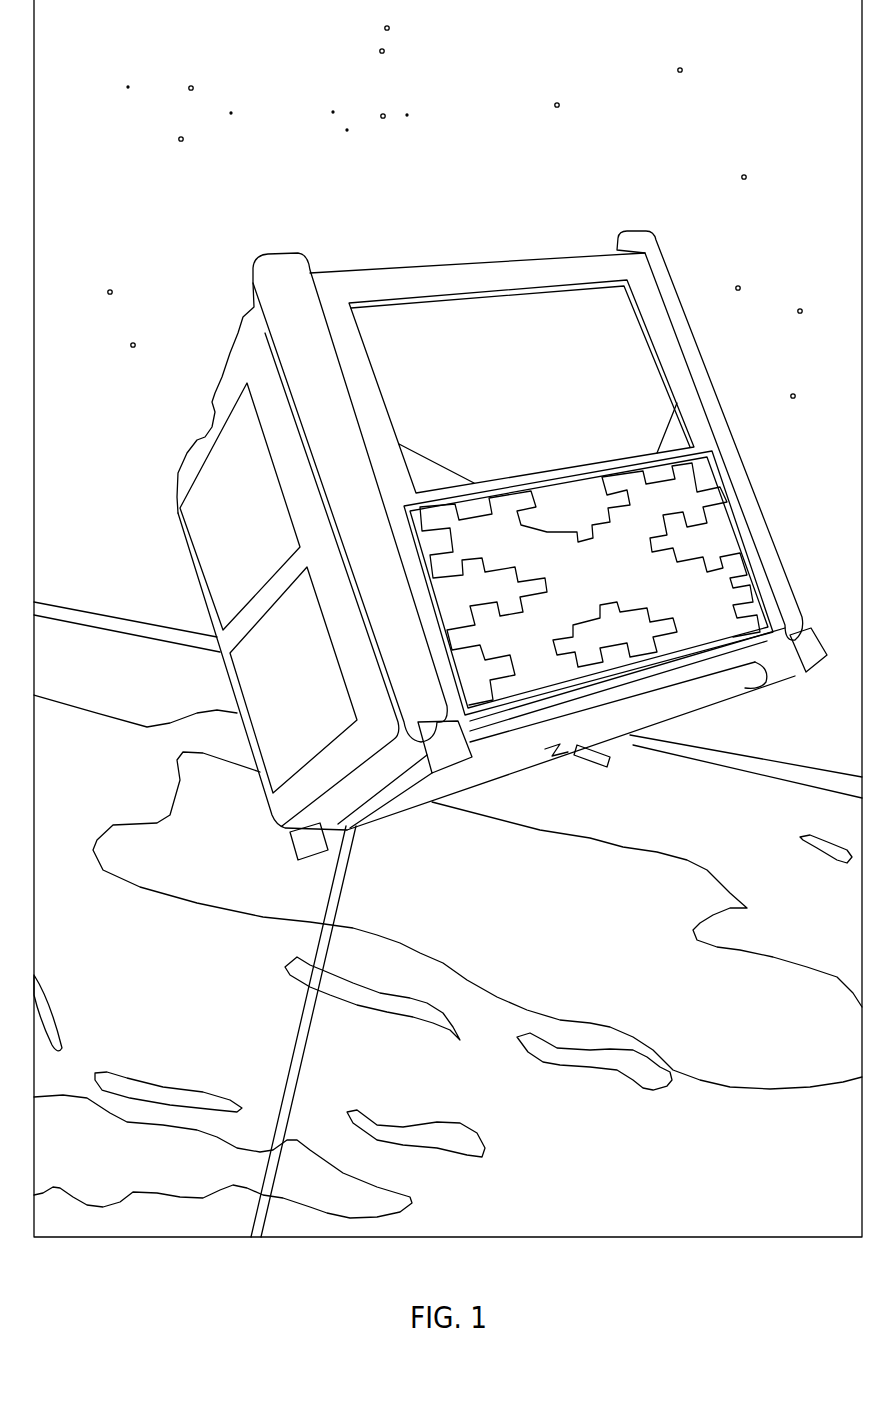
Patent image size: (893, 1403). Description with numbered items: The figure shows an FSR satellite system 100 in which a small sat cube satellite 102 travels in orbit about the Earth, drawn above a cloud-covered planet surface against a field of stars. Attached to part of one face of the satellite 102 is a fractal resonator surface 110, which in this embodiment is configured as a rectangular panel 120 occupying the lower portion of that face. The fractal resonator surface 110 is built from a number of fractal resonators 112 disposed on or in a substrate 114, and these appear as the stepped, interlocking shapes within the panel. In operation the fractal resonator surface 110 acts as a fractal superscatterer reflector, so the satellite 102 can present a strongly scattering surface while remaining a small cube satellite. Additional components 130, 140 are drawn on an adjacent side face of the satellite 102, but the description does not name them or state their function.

The FSR satellite system 100 is at (477, 734).
The small sat cube satellite 102 is at (430, 800).
The fractal resonator surface 110 is at (659, 705).
The fractal resonators 112 is at (590, 680).
The substrate 114 is at (718, 640).
The rectangular panel 120 is at (490, 708).
The solar panel 130 is at (253, 692).
The solar panel 140 is at (215, 567).